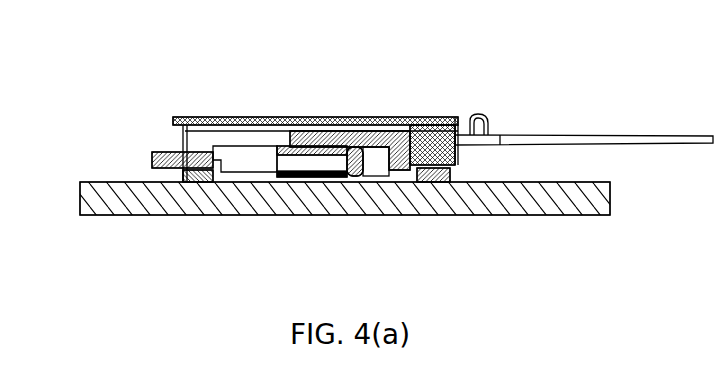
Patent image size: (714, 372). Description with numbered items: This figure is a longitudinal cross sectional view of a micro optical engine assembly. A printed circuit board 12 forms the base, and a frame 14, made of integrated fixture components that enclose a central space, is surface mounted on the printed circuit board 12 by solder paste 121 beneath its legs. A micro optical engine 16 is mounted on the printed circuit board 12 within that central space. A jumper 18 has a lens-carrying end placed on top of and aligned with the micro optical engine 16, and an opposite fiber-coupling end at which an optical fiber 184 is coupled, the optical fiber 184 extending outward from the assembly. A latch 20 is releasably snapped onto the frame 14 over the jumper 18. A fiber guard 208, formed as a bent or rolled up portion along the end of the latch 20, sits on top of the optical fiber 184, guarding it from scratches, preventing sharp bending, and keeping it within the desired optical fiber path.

The printed circuit board 12 is at (305, 216).
The frame 14 is at (167, 154).
The micro optical engine 16 is at (309, 153).
The jumper 18 is at (379, 132).
The latch 20 is at (210, 119).
The solder paste 121 is at (197, 183).
The optical fiber 184 is at (667, 145).
The fiber guard 208 is at (493, 119).